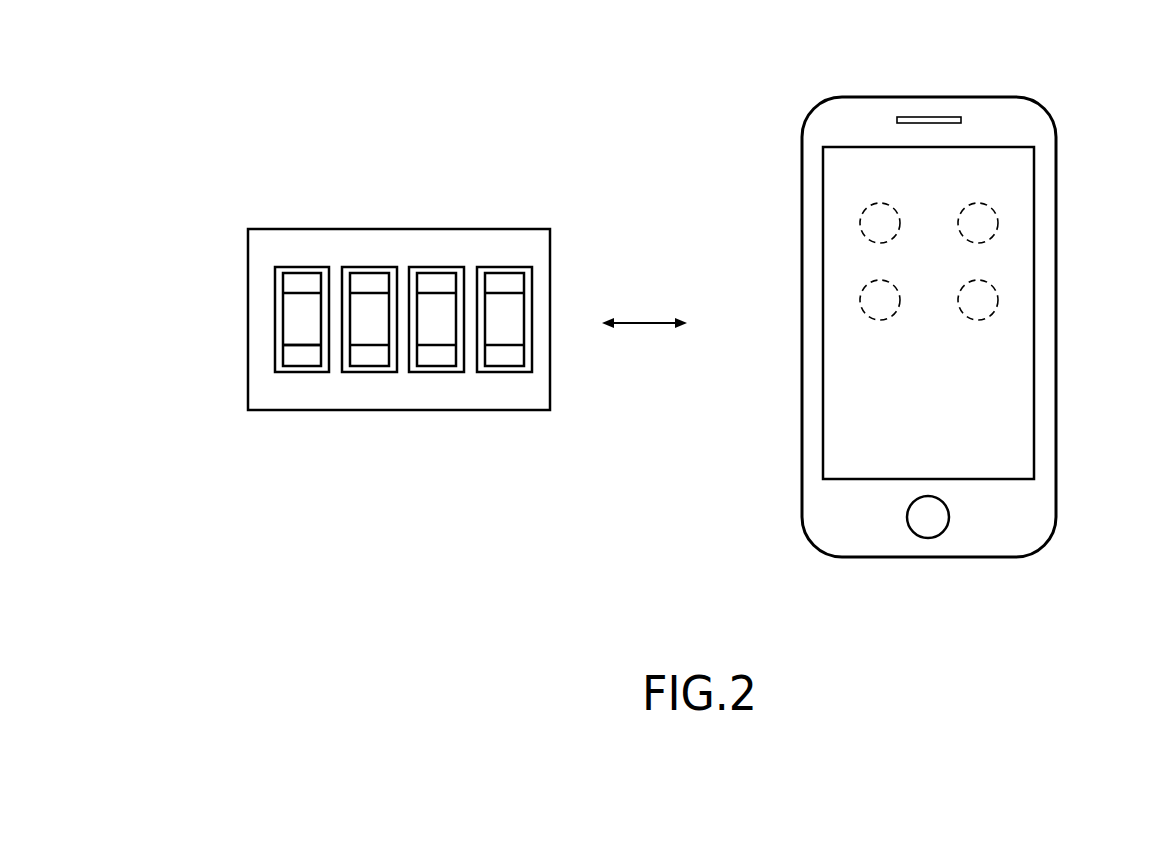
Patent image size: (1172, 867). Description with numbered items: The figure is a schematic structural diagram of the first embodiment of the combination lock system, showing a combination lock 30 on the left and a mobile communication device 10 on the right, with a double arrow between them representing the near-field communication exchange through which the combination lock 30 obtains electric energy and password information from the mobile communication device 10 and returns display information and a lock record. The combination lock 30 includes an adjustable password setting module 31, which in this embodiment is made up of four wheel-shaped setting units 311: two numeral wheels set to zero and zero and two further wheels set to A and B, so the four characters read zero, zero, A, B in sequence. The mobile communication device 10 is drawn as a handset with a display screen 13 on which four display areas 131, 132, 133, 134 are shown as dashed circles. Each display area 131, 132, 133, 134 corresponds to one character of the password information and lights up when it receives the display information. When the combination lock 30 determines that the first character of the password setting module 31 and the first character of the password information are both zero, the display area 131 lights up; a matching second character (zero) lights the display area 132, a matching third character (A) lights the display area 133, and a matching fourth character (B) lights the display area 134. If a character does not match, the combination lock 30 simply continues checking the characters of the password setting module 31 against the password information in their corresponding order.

The mobile communication device 10 is at (1002, 113).
The display screen 13 is at (1017, 173).
The display area 131 is at (850, 223).
The display area 132 is at (1008, 221).
The display area 133 is at (850, 300).
The display area 134 is at (1008, 298).
The combination lock 30 is at (492, 228).
The password setting module 31 is at (385, 252).
The wheel-shaped setting unit 311 is at (293, 353).